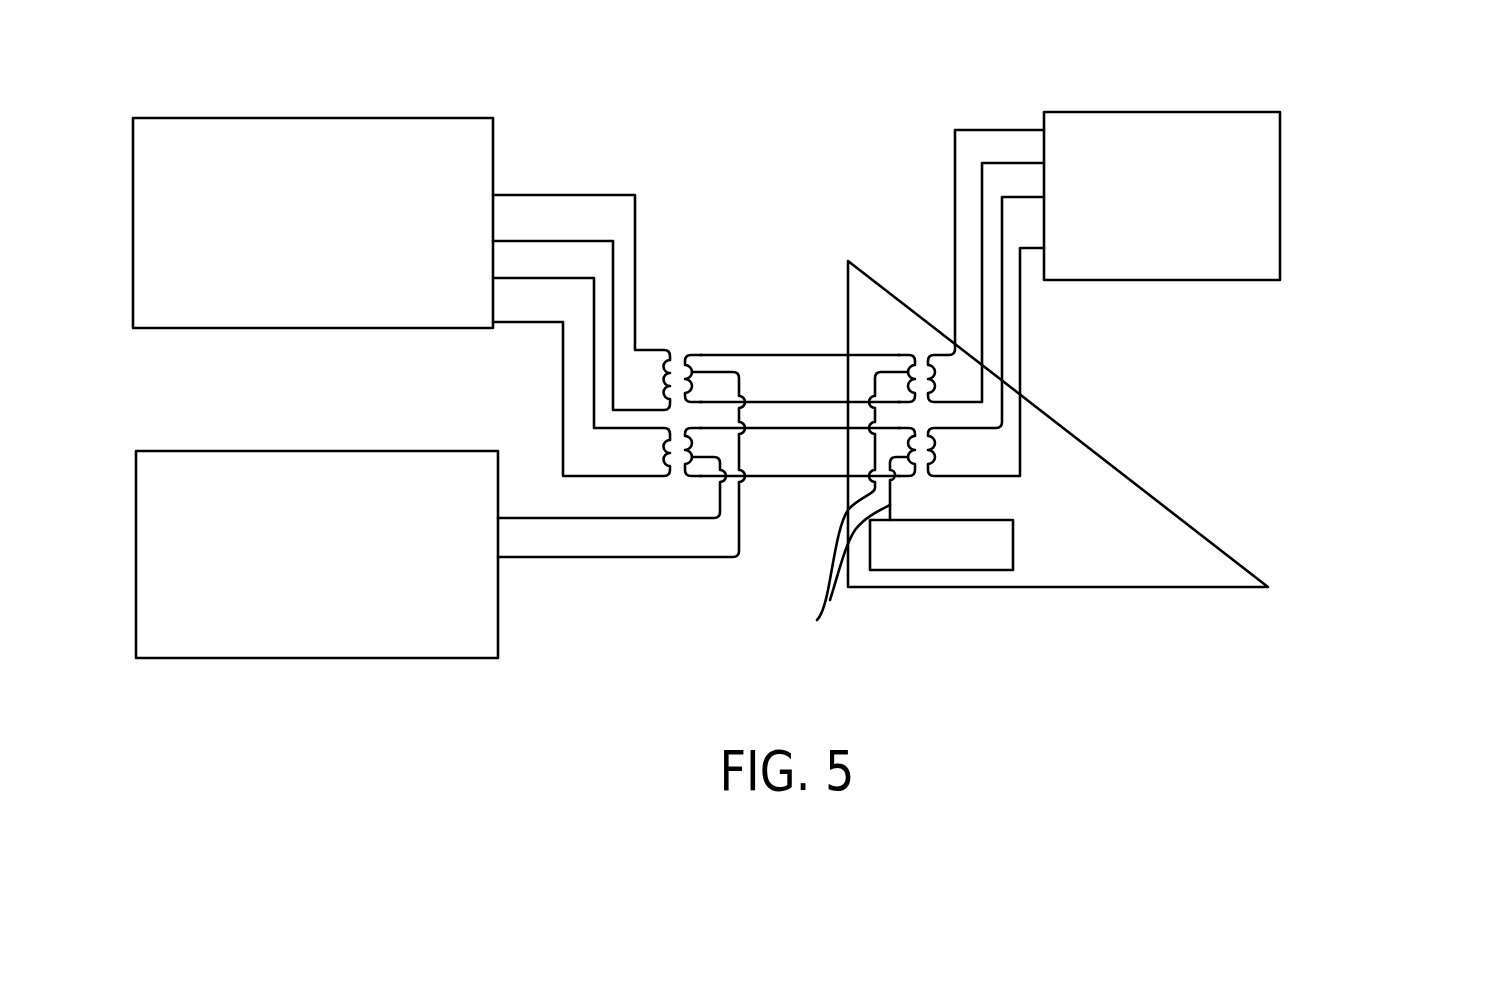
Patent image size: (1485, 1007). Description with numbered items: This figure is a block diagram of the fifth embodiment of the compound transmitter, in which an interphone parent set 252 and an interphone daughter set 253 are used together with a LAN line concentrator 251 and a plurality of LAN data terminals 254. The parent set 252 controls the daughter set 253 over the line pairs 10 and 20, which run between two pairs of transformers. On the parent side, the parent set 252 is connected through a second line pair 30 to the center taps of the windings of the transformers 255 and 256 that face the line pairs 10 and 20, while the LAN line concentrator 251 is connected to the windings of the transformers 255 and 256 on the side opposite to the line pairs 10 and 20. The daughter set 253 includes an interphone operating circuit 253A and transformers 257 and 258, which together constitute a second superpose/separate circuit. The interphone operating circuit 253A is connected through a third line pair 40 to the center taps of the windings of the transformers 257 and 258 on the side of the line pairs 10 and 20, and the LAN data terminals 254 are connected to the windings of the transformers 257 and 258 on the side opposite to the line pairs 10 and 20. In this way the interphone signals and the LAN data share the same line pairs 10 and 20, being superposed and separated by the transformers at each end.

The LAN line concentrator 251 is at (208, 148).
The interphone parent set 252 is at (193, 477).
The interphone daughter set 253 is at (1152, 525).
The interphone operating circuit 253A is at (957, 560).
The LAN data terminal 254 is at (1081, 124).
The transformer 255 is at (677, 363).
The transformer 256 is at (677, 473).
The transformer 257 is at (923, 357).
The transformer 258 is at (923, 467).
The line pair 10 is at (814, 400).
The line pair 20 is at (767, 477).
The second line pair 30 is at (600, 520).
The third line pair 40 is at (844, 507).